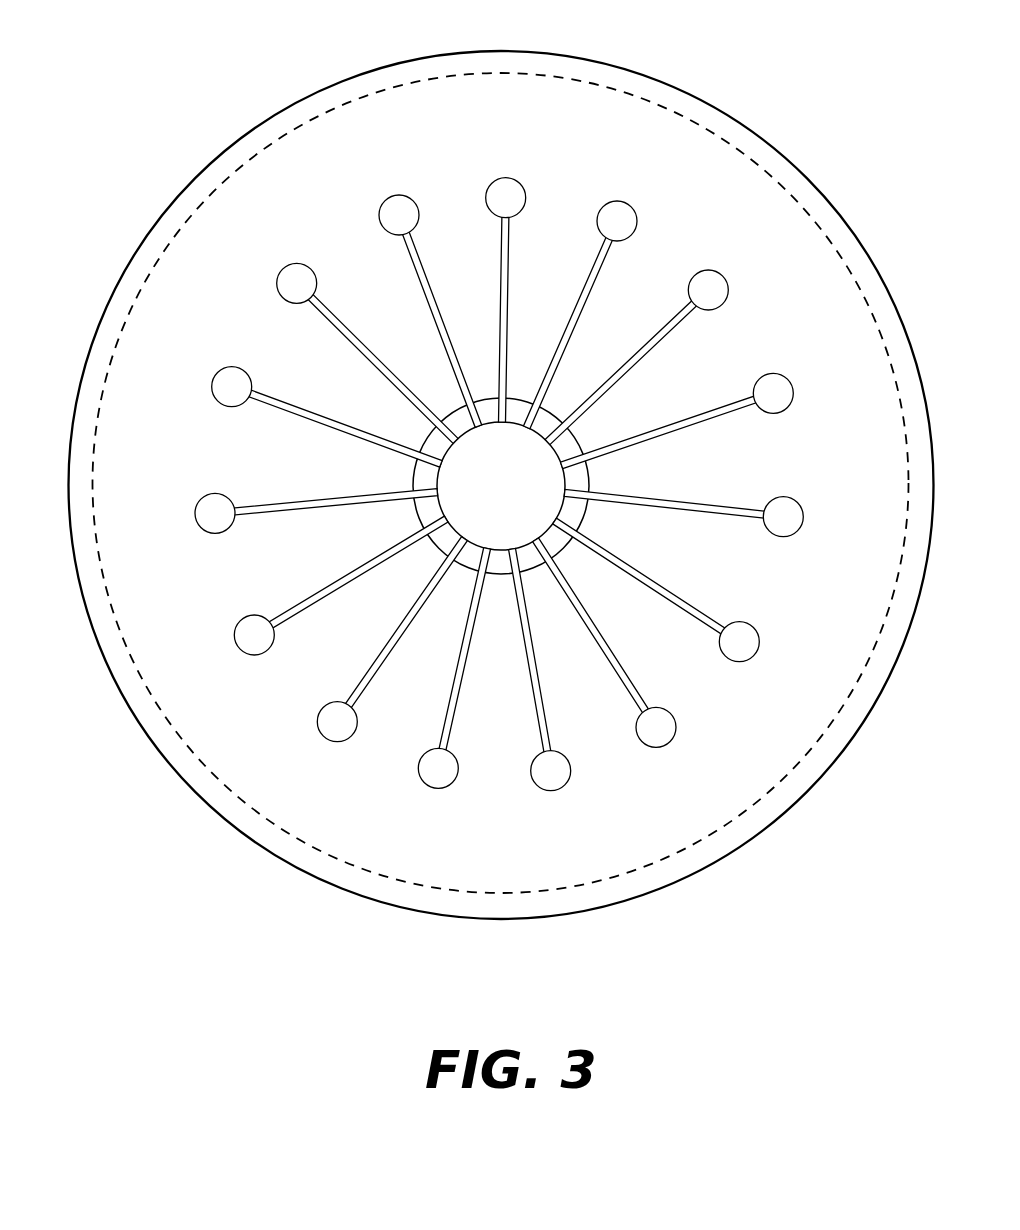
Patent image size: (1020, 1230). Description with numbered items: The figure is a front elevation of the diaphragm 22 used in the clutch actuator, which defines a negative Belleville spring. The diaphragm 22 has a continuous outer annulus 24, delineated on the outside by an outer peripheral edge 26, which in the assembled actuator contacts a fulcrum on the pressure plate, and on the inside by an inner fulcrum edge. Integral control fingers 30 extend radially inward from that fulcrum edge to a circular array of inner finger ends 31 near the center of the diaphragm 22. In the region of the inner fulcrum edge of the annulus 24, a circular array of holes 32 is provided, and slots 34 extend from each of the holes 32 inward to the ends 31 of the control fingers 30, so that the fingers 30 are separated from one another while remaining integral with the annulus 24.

The diaphragm 22 is at (501, 459).
The continuous outer annulus 24 is at (581, 152).
The outer peripheral edge 26 is at (542, 50).
The control fingers 30 is at (627, 339).
The inner finger ends 31 is at (512, 547).
The holes 32 is at (608, 216).
The slots 34 is at (378, 362).